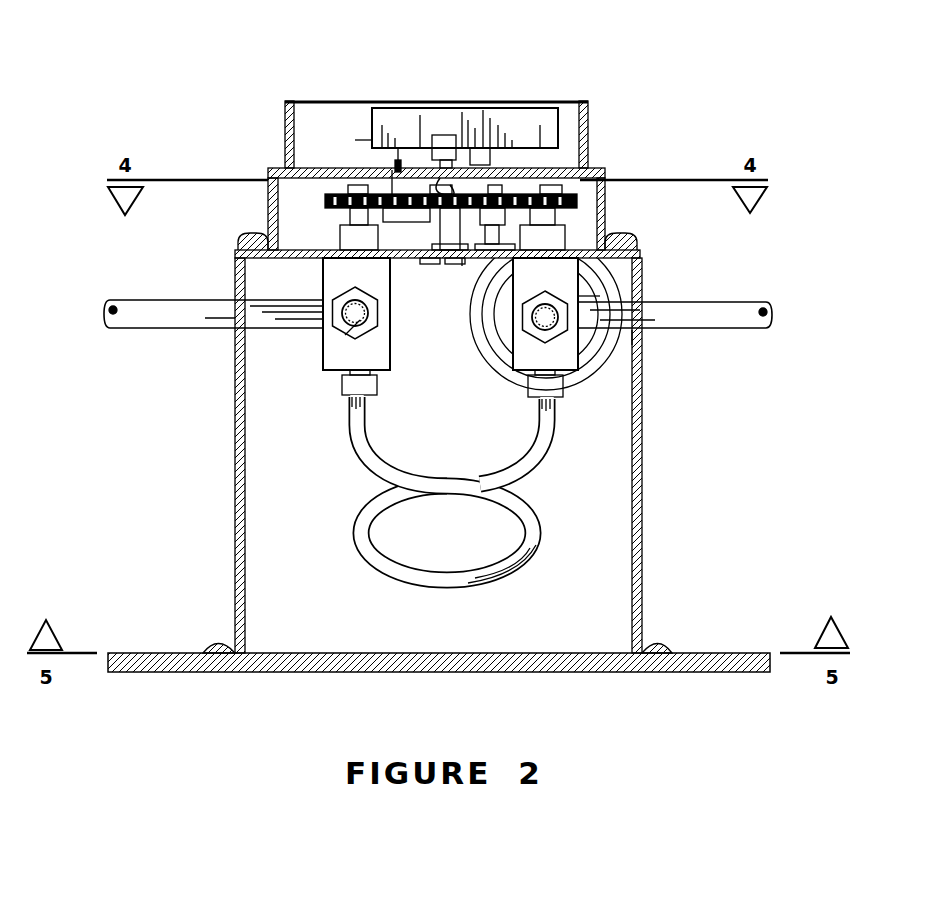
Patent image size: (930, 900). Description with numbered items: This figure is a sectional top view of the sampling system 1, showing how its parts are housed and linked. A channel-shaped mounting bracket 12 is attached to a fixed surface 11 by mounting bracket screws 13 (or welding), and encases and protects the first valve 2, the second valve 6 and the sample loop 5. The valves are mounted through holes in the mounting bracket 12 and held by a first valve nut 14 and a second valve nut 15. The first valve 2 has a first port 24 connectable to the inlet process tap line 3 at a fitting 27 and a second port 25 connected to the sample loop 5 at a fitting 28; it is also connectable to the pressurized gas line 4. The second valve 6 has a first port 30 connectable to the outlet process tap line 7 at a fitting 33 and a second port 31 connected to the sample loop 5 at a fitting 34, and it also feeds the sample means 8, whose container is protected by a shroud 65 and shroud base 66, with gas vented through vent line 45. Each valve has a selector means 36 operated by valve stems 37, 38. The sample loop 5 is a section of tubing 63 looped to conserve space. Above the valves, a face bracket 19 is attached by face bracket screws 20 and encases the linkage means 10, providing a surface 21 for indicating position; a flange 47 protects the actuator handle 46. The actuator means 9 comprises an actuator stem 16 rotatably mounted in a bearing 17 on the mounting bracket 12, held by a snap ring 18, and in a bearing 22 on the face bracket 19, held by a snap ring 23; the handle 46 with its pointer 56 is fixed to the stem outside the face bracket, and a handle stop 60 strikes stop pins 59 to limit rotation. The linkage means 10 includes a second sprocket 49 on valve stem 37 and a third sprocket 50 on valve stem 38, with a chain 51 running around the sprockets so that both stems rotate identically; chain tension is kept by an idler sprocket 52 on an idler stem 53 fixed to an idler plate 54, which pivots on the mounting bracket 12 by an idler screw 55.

The invention 1 is at (606, 84).
The first valve 2 is at (357, 317).
The inlet process tap line 3 is at (332, 338).
The pressurized gas line 4 is at (172, 318).
The sample loop 5 is at (455, 495).
The second valve 6 is at (567, 314).
The outlet process tap line 7 is at (565, 312).
The sample means 8 is at (536, 329).
The actuator means 9 is at (460, 86).
The linkage means 10 is at (598, 176).
The fixed surface 11 is at (135, 653).
The mounting bracket 12 is at (642, 525).
The mounting bracket screws 13 is at (215, 645).
The first valve nut 14 is at (338, 238).
The second valve nut 15 is at (555, 238).
The actuator stem 16 is at (447, 264).
The bearing 17 is at (442, 248).
The snap ring 18 is at (432, 264).
The face bracket 19 is at (270, 170).
The face bracket screws 20 is at (250, 235).
The surface 21 is at (435, 116).
The bearing 22 is at (432, 180).
The snap ring 23 is at (447, 137).
The first port 24 is at (372, 335).
The second port 25 is at (378, 375).
The fitting 27 is at (350, 333).
The fitting 28 is at (348, 397).
The first port 30 is at (533, 314).
The second port 31 is at (564, 378).
The fitting 33 is at (533, 332).
The fitting 34 is at (560, 397).
The selector means 36 is at (330, 219).
The valve stem 37 is at (380, 222).
The valve stem 38 is at (492, 226).
The vent line 45 is at (683, 322).
The actuator handle 46 is at (506, 75).
The flange 47 is at (285, 120).
The second sprocket 49 is at (340, 196).
The third sprocket 50 is at (570, 186).
The chain 51 is at (392, 192).
The idler sprocket 52 is at (492, 180).
The idler stem 53 is at (462, 266).
The idler plate 54 is at (536, 314).
The idler screw 55 is at (533, 314).
The pointer 56 is at (362, 136).
The stop pins 59 is at (399, 120).
The handle stop 60 is at (478, 130).
The tubing 63 is at (505, 573).
The shroud 65 is at (600, 305).
The shroud base 66 is at (632, 335).